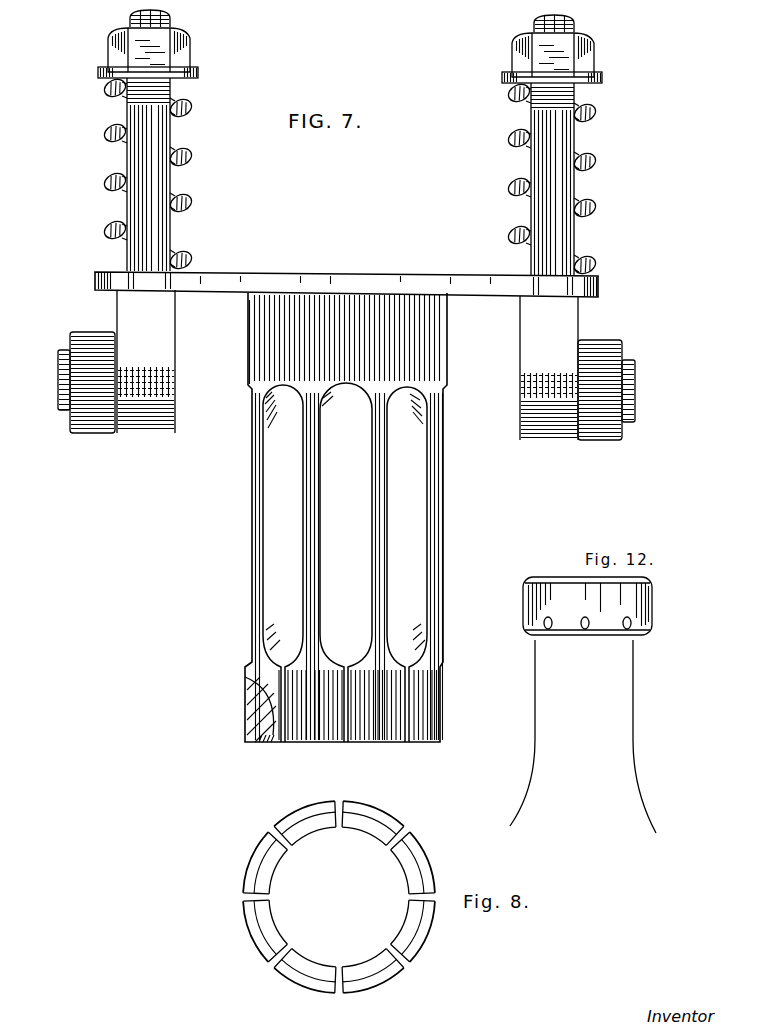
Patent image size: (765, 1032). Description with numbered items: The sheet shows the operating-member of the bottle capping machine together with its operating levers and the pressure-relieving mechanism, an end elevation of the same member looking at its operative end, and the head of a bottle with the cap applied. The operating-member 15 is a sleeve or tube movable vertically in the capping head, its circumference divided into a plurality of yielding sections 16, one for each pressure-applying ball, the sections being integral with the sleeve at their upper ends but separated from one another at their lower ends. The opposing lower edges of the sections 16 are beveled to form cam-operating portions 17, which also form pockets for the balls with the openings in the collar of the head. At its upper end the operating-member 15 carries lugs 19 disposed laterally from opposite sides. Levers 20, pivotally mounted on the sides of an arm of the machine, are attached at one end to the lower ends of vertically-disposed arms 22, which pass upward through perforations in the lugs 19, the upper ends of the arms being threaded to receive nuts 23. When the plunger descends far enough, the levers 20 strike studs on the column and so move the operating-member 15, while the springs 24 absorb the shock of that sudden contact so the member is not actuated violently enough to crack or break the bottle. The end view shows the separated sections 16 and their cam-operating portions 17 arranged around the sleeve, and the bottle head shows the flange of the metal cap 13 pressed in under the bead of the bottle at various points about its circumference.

In FIG. 12, the metal cap 13 is at (652, 632).
In FIG. 7, the operating-member 15 is at (422, 493).
In FIG. 7, the yielding sections 16 is at (320, 742).
In FIG. 8, the yielding sections 16 is at (385, 812).
In FIG. 7, the cam-operating portions 17 is at (270, 742).
In FIG. 8, the cam-operating portions 17 is at (265, 867).
In FIG. 7, the lugs 19 is at (95, 276).
In FIG. 7, the levers 20 is at (165, 181).
In FIG. 7, the vertically-disposed arms 22 is at (120, 312).
In FIG. 7, the nuts 23 is at (185, 52).
In FIG. 7, the springs 24 is at (187, 205).